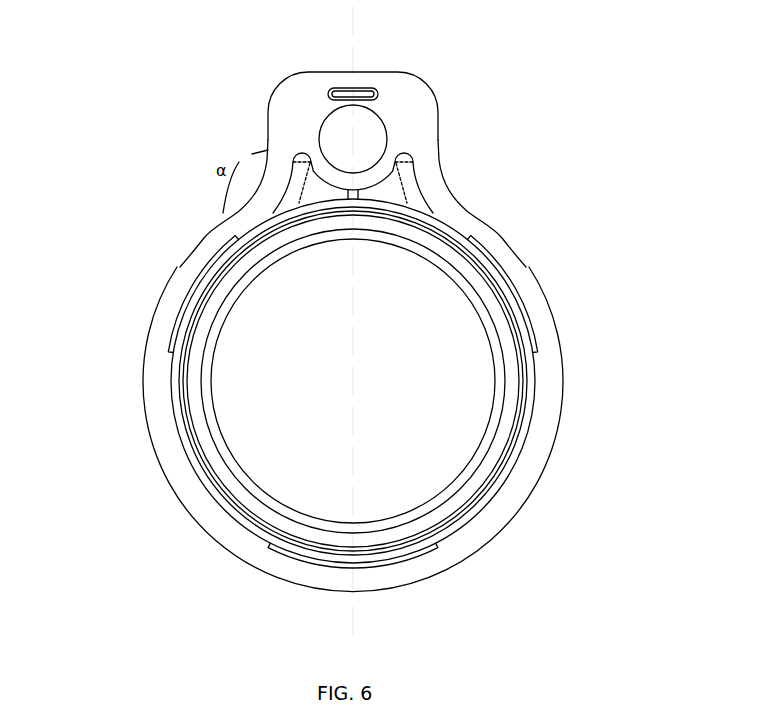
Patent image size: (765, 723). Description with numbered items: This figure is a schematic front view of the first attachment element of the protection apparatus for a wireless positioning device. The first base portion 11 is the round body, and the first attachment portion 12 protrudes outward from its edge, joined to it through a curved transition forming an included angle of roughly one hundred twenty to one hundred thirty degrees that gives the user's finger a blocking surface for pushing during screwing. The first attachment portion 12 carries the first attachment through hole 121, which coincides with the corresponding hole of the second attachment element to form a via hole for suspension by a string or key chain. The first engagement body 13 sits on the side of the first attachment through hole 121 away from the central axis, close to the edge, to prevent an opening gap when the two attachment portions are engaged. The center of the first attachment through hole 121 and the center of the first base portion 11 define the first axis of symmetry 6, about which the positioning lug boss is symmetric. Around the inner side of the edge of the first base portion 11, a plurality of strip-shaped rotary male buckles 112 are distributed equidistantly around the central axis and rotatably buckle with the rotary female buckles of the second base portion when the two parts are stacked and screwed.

The first axis of symmetry 6 is at (352, 53).
The first base portion 11 is at (273, 429).
The rotary male buckles 112 is at (188, 282).
The first attachment portion 12 is at (293, 123).
The first attachment through hole 121 is at (352, 148).
The first engagement body 13 is at (357, 88).